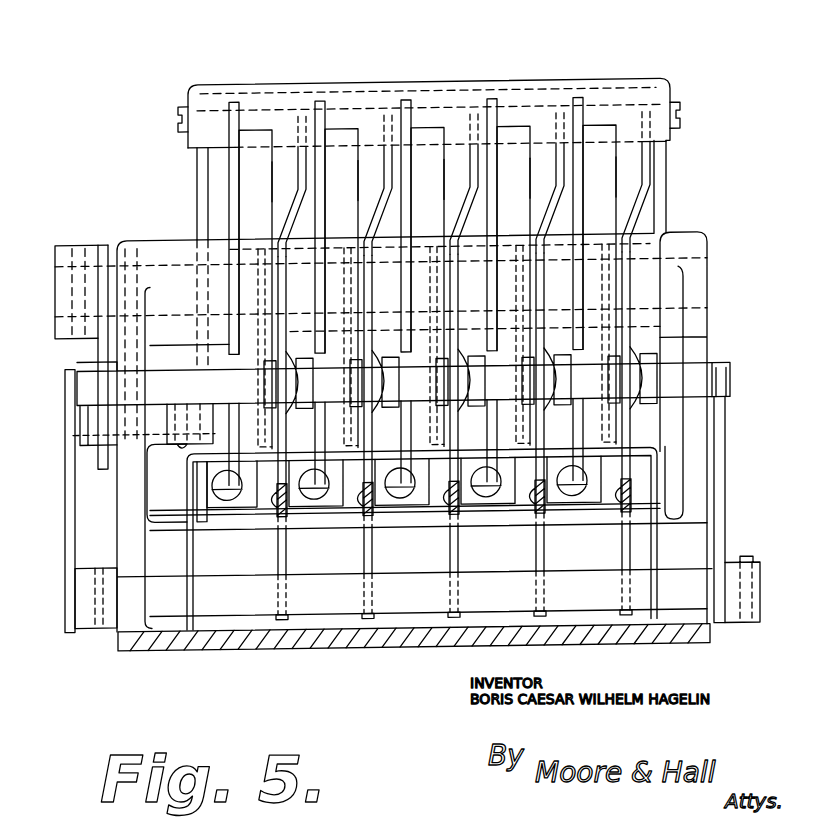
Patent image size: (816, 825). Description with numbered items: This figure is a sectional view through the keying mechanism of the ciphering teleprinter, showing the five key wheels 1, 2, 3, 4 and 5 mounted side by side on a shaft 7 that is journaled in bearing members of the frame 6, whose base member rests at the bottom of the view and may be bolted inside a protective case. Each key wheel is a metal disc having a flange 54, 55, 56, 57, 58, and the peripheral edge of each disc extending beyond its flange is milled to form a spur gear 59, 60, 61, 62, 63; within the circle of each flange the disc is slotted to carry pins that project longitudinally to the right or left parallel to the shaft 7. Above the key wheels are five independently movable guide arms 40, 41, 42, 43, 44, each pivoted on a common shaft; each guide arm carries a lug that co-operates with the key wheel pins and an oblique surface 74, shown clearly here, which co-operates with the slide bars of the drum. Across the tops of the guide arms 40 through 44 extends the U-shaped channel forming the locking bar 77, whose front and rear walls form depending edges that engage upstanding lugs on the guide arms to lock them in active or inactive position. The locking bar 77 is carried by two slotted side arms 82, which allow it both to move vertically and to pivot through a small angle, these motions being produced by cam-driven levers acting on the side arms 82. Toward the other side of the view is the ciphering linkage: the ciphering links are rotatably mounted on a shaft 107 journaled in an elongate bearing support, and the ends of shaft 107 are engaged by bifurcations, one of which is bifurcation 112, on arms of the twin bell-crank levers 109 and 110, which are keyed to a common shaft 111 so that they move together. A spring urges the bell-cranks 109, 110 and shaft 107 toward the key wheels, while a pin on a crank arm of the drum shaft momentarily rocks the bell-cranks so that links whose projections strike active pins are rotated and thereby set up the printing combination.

The locking bar 77 is at (388, 86).
The side arms 82 is at (197, 185).
The shaft 7 is at (707, 279).
The bell-crank lever 109 is at (65, 500).
The common shaft 111 is at (65, 596).
The frame 6 is at (409, 648).
The shaft 107 is at (730, 380).
The bifurcation 112 is at (719, 367).
The bell-crank lever 110 is at (725, 445).
The spur gear 59 is at (240, 103).
The spur gear 60 is at (326, 103).
The spur gear 61 is at (412, 102).
The spur gear 62 is at (498, 103).
The spur gear 63 is at (584, 103).
The flange 54 is at (258, 128).
The flange 55 is at (344, 128).
The flange 56 is at (430, 128).
The flange 57 is at (516, 128).
The flange 58 is at (602, 128).
The key wheel 1 is at (272, 163).
The key wheel 2 is at (358, 163).
The key wheel 3 is at (444, 163).
The key wheel 4 is at (530, 163).
The key wheel 5 is at (616, 163).
The oblique surface 74 is at (296, 207).
The guide arm 40 is at (285, 558).
The guide arm 41 is at (371, 558).
The guide arm 42 is at (457, 558).
The guide arm 43 is at (543, 558).
The guide arm 44 is at (623, 556).